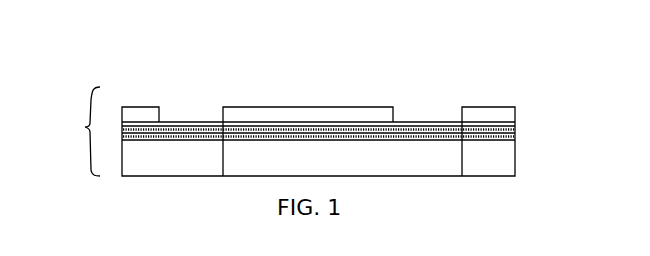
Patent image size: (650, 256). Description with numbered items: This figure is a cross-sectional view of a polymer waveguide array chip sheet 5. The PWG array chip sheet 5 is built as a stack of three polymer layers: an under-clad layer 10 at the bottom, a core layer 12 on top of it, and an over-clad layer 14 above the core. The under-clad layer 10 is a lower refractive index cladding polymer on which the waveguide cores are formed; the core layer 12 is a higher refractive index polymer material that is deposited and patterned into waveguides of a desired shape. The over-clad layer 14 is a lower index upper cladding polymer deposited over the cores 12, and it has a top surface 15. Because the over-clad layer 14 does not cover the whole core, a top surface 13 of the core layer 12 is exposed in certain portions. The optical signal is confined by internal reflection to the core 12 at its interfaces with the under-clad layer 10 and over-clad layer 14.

The PWG array chip sheet 5 is at (86, 127).
The under-clad layer 10 is at (508, 158).
The core layer 12 is at (510, 132).
The top surface of core layer 13 is at (418, 122).
The over-clad layer 14 is at (350, 115).
The top surface of over-clad layer 15 is at (271, 106).